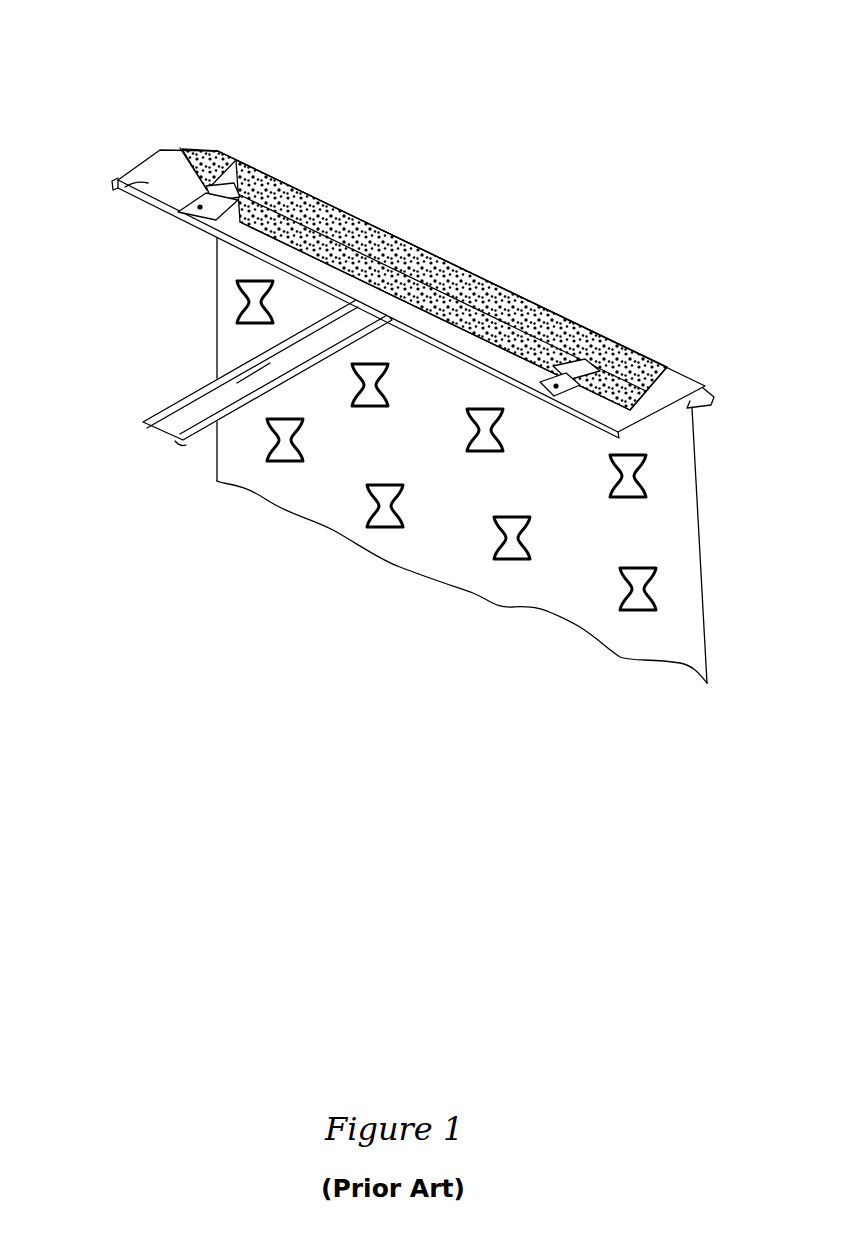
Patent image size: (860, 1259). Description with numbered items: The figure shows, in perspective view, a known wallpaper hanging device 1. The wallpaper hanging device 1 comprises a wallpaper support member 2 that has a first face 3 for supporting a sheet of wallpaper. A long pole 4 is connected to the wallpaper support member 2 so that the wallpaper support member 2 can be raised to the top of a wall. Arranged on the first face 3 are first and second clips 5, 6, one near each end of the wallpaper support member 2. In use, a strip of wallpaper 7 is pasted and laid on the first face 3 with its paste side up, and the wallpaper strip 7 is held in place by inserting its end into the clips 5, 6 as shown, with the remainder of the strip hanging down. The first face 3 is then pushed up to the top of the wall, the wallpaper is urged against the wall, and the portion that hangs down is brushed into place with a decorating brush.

The wallpaper hanging device 1 is at (88, 130).
The wallpaper support member 2 is at (147, 183).
The first face 3 is at (420, 253).
The long pole 4 is at (190, 396).
The first clip 5 is at (231, 170).
The second clip 6 is at (595, 377).
The strip of wallpaper 7 is at (700, 610).